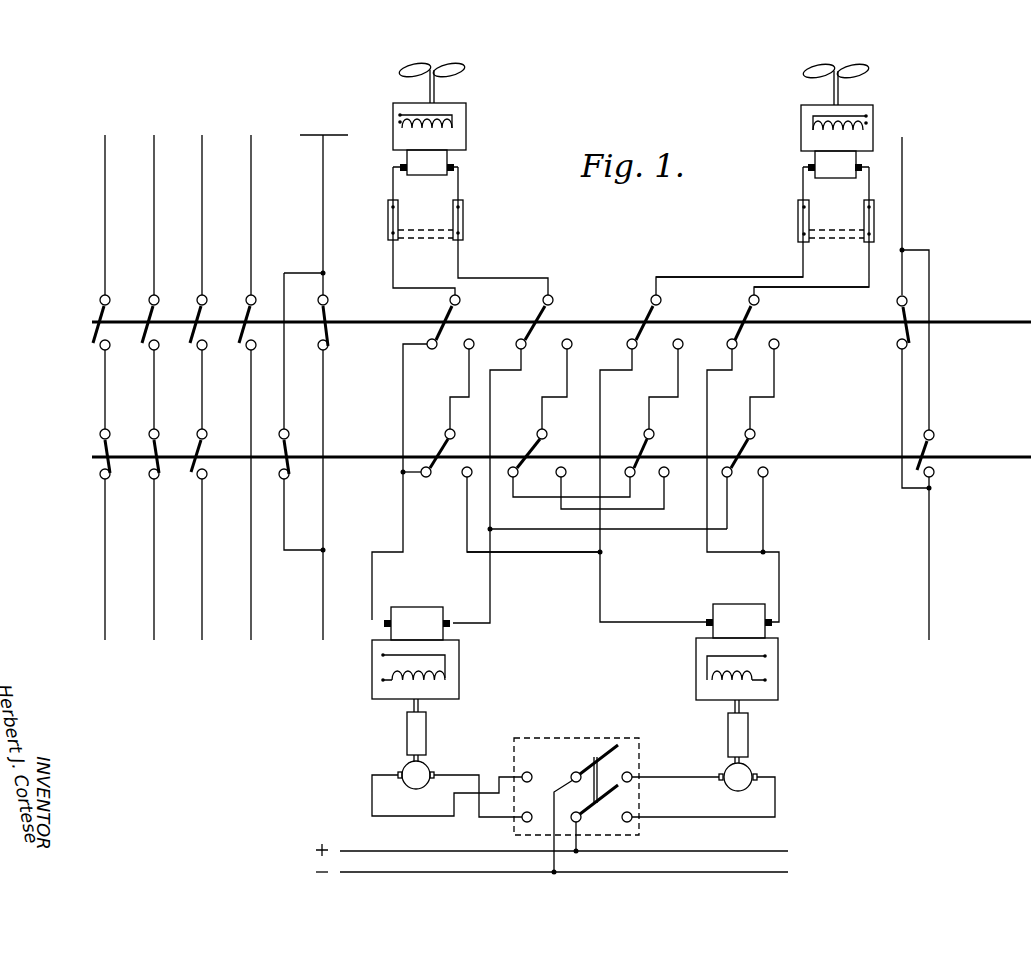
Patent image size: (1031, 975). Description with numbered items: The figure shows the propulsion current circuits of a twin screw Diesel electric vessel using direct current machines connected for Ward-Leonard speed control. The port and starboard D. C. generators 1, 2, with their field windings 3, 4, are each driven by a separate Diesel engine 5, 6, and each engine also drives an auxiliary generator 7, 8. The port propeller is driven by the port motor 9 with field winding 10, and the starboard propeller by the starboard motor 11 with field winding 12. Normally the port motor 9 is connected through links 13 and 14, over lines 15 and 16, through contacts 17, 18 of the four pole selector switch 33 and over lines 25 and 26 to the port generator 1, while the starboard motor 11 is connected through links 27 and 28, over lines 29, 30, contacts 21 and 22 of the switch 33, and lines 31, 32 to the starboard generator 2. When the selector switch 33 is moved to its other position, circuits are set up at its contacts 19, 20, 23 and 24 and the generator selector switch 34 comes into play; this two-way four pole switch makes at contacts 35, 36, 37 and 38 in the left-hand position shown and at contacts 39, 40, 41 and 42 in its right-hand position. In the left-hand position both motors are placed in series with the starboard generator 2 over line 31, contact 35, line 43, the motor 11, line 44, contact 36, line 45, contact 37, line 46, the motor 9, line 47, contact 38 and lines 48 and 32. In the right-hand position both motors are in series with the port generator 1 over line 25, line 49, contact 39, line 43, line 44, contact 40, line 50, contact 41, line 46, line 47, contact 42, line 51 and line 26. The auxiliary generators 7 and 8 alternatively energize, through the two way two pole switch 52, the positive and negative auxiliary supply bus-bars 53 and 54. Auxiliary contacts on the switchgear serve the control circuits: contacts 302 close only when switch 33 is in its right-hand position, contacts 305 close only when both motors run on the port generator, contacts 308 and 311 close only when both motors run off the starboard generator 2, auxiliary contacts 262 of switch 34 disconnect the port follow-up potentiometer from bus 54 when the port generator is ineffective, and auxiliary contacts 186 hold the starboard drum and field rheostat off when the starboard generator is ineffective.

The port D. C. generator 1 is at (770, 626).
The starboard D. C. generator 2 is at (384, 626).
The field winding 3 is at (745, 682).
The field winding 4 is at (415, 677).
The Diesel engine 5 is at (748, 733).
The Diesel engine 6 is at (426, 730).
The auxiliary generator 7 is at (746, 772).
The auxiliary generator 8 is at (424, 772).
The port motor 9 is at (873, 142).
The field winding 10 is at (862, 130).
The starboard motor 11 is at (466, 138).
The field winding 12 is at (452, 127).
The link 13 is at (798, 216).
The link 14 is at (864, 213).
The line 15 is at (683, 277).
The line 16 is at (838, 289).
The contacts 17 is at (635, 348).
The contacts 18 is at (735, 348).
The contacts 19 is at (683, 344).
The contacts 20 is at (779, 344).
The contacts 21 is at (431, 355).
The contacts 22 is at (524, 348).
The contacts 23 is at (474, 344).
The contacts 24 is at (572, 344).
The line 25 is at (600, 428).
The line 26 is at (779, 579).
The link 27 is at (398, 213).
The link 28 is at (463, 213).
The line 29 is at (460, 299).
The line 30 is at (553, 291).
The line 31 is at (403, 428).
The line 32 is at (490, 428).
The four pole selector switch 33 is at (602, 320).
The generator selector switch 34 is at (677, 455).
The contact 35 is at (428, 484).
The contact 36 is at (511, 478).
The contact 37 is at (632, 477).
The contact 38 is at (729, 477).
The contact 39 is at (463, 478).
The contact 40 is at (566, 477).
The contact 41 is at (667, 477).
The contact 42 is at (768, 477).
The line 43 is at (452, 405).
The line 44 is at (542, 415).
The line 45 is at (542, 498).
The line 46 is at (665, 397).
The line 47 is at (772, 403).
The line 48 is at (632, 529).
The line 49 is at (540, 553).
The line 50 is at (664, 509).
The line 51 is at (764, 521).
The two way two pole switch 52 is at (628, 752).
The positive auxiliary supply bus-bar 53 is at (318, 137).
The negative auxiliary supply bus-bar 54 is at (718, 872).
The auxiliary contacts 186 is at (330, 333).
The auxiliary contacts 262 is at (904, 333).
The contacts 302 is at (244, 318).
The contacts 305 is at (235, 310).
The contacts 308 is at (150, 318).
The contacts 311 is at (106, 318).